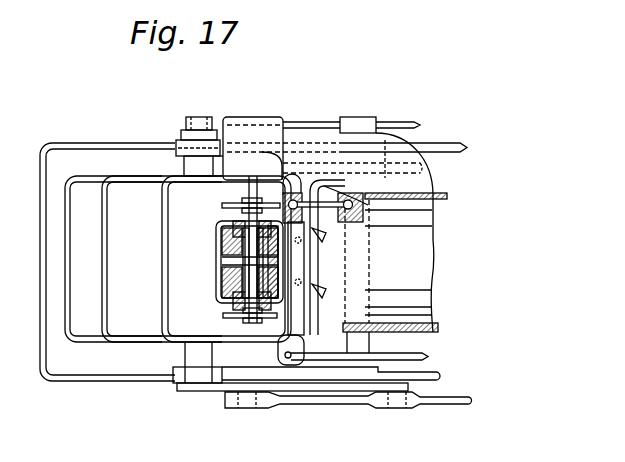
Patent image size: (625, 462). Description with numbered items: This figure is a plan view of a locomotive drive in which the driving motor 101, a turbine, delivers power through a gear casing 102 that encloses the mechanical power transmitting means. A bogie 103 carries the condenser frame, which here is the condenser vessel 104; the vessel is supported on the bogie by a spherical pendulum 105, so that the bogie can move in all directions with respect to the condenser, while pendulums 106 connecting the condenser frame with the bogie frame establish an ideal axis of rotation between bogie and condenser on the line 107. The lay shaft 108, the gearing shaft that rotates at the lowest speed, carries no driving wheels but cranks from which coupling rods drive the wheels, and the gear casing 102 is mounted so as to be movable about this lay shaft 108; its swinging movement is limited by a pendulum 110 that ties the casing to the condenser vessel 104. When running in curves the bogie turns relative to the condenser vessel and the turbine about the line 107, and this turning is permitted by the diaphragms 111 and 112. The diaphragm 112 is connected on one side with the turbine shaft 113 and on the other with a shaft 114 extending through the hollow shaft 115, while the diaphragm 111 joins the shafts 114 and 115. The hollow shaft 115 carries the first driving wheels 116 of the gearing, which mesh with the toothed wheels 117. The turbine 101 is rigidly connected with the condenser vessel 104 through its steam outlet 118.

The driving motor 101 is at (268, 128).
The gear casing 102 is at (178, 259).
The bogie 103 is at (77, 146).
The condenser vessel 104 is at (362, 226).
The spherical pendulum 105 is at (288, 358).
The pendulums 106 is at (322, 290).
The axis line 107 is at (220, 248).
The lay shaft 108 is at (195, 165).
The pendulum 110 is at (318, 197).
The diaphragm 111 is at (285, 305).
The diaphragm 112 is at (240, 198).
The turbine shaft 113 is at (245, 198).
The shaft 114 is at (247, 316).
The hollow shaft 115 is at (242, 287).
The first driving wheels 116 is at (246, 282).
The toothed wheels 117 is at (249, 260).
The steam outlet 118 is at (305, 145).